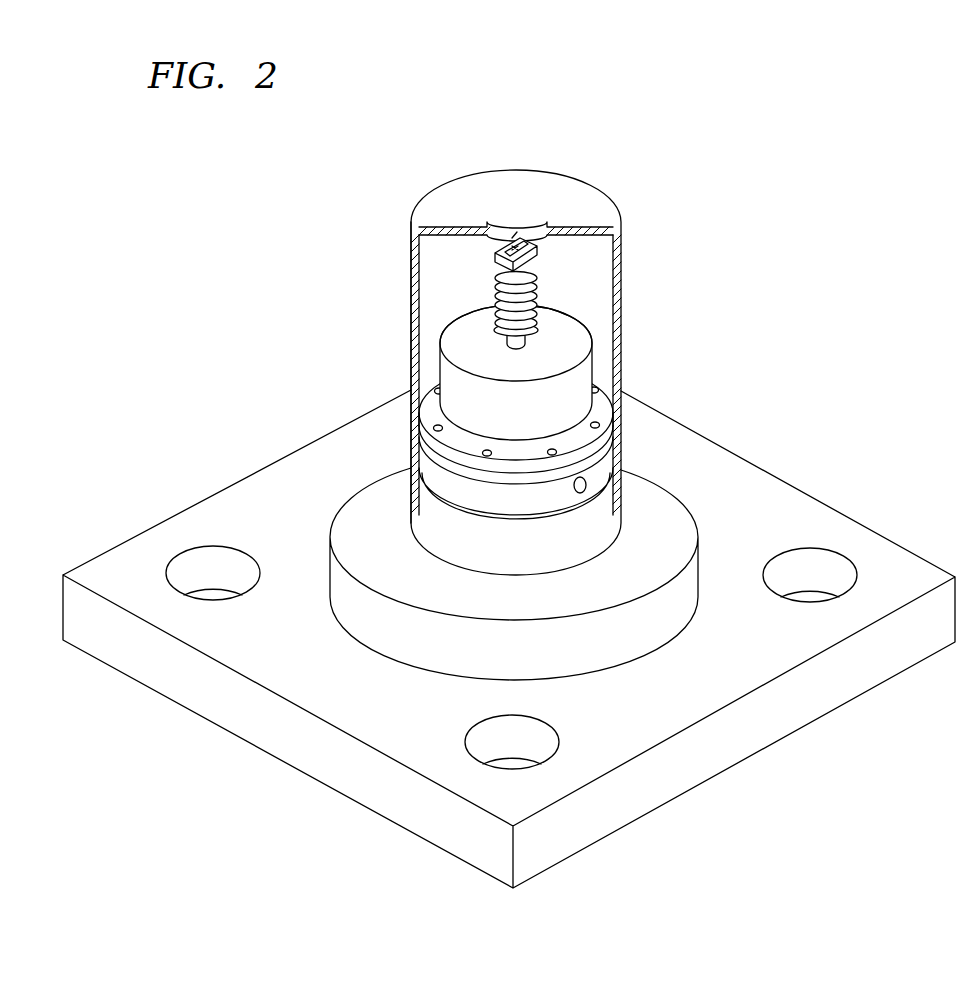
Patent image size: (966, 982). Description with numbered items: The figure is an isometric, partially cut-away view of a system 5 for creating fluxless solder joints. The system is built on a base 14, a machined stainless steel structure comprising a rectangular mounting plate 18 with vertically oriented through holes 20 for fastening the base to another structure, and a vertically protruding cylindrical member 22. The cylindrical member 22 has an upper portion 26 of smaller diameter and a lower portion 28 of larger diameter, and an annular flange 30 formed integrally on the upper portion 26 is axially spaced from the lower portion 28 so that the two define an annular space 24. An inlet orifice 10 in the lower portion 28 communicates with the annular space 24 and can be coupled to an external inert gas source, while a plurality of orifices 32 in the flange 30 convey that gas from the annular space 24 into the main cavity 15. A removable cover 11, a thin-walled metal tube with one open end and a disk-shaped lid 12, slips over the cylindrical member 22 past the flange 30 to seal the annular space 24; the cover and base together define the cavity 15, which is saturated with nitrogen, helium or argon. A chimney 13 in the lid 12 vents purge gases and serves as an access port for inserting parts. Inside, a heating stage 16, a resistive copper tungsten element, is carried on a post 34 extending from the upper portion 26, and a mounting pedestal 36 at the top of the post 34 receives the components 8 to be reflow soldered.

The system 5 is at (510, 88).
The components 8 is at (516, 233).
The inlet orifice 10 is at (592, 487).
The cover 11 is at (403, 262).
The lid 12 is at (553, 336).
The chimney 13 is at (517, 226).
The base 14 is at (509, 639).
The cavity 15 is at (593, 297).
The heating stage 16 is at (541, 291).
The mounting plate 18 is at (827, 503).
The through holes 20 is at (810, 570).
The cylindrical member 22 is at (458, 487).
The annular space 24 is at (513, 478).
The upper portion 26 is at (562, 400).
The lower portion 28 is at (538, 500).
The annular flange 30 is at (494, 413).
The orifices 32 is at (483, 453).
The post 34 is at (507, 342).
The mounting pedestal 36 is at (497, 262).